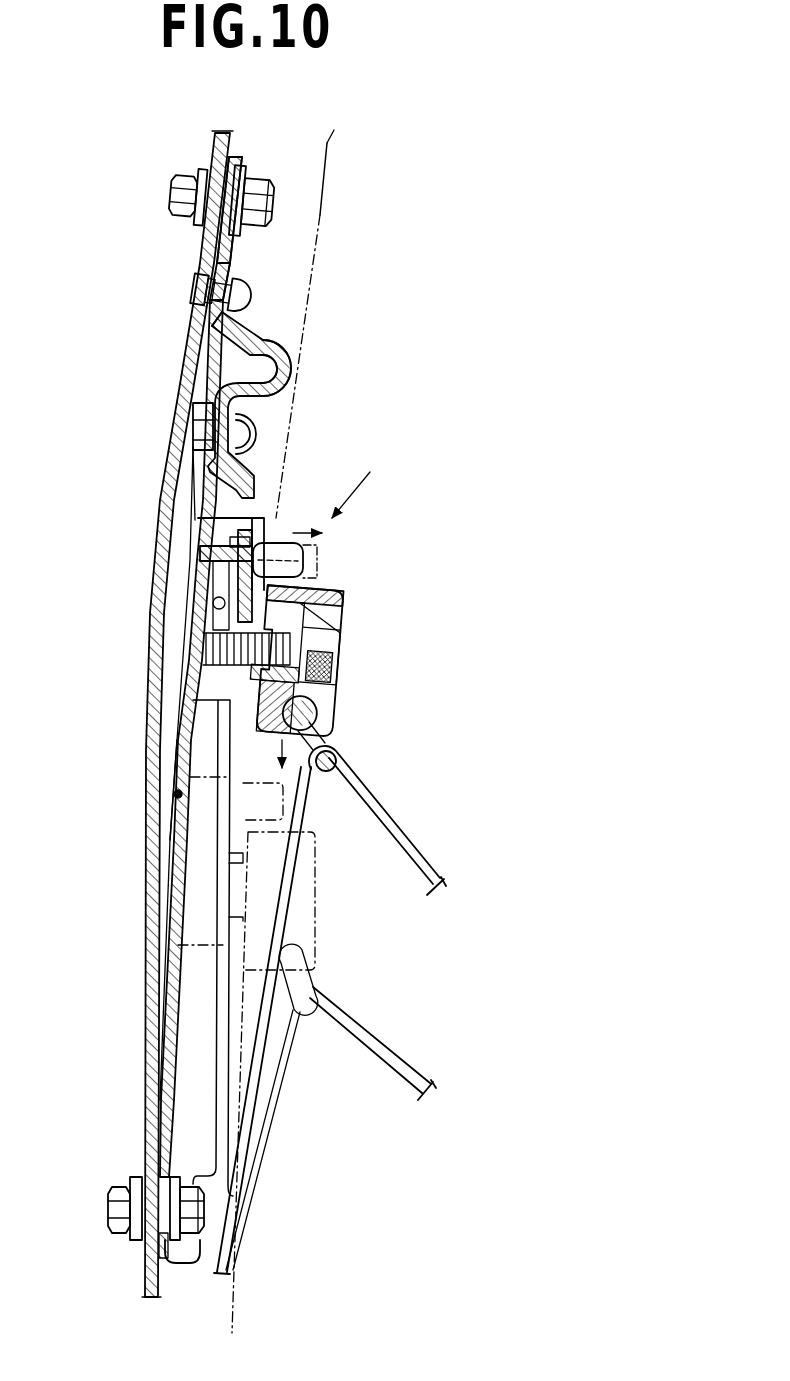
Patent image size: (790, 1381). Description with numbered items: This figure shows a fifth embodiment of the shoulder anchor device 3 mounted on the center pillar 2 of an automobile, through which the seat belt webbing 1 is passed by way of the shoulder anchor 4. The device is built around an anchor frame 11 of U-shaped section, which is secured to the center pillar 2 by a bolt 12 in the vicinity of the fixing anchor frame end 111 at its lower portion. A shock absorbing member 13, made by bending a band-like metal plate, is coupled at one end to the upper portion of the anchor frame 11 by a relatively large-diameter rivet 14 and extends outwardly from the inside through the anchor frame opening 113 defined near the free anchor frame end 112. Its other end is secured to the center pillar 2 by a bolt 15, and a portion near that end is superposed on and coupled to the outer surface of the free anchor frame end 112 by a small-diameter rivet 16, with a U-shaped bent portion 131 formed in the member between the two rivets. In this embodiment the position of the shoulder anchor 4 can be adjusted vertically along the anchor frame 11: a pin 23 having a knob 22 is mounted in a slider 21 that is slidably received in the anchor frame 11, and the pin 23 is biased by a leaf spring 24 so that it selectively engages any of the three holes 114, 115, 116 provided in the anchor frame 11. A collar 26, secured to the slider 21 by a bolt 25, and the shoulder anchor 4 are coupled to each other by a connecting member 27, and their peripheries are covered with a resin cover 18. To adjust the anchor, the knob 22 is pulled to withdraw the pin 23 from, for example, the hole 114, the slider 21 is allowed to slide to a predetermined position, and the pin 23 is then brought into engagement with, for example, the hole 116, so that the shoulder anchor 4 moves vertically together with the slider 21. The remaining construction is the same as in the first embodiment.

The webbing 1 is at (362, 923).
The center pillar 2 is at (169, 714).
The shoulder anchor device 3 is at (341, 485).
The shoulder anchor 4 is at (332, 792).
The anchor frame 11 is at (162, 667).
The bolt 12 is at (126, 1217).
The shock absorbing member 13 is at (279, 383).
The rivet 14 is at (261, 433).
The bolt 15 is at (198, 191).
The rivet 16 is at (193, 281).
The cover 18 is at (322, 667).
The slider 21 is at (246, 1012).
The knob 22 is at (328, 343).
The pin 23 is at (183, 534).
The leaf spring 24 is at (262, 532).
The bolt 25 is at (299, 665).
The collar 26 is at (331, 602).
The connecting member 27 is at (262, 1002).
The fixing anchor frame end 111 is at (186, 1276).
The free anchor frame end 112 is at (262, 219).
The anchor frame opening 113 is at (173, 321).
The hole 114 is at (171, 574).
The hole 115 is at (135, 751).
The hole 116 is at (136, 790).
The U-shaped bent portion 131 is at (307, 368).